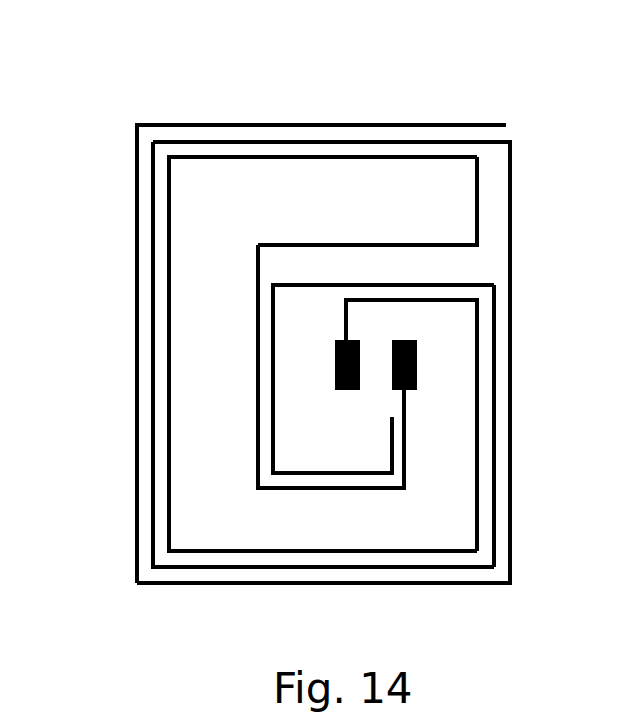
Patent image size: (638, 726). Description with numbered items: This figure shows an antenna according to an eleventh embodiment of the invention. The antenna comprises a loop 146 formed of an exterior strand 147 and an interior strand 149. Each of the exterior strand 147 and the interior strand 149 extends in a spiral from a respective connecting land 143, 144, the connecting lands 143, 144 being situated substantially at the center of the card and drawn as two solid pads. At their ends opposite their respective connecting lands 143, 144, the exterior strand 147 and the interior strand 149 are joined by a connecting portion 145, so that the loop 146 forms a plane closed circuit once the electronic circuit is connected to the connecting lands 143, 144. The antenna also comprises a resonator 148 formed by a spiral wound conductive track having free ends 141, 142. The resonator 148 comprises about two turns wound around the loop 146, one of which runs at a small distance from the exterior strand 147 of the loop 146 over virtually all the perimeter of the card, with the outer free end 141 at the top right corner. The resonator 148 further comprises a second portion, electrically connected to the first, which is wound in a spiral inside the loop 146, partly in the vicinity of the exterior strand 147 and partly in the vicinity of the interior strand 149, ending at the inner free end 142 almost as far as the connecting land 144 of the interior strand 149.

The free end 141 is at (507, 125).
The free end 142 is at (392, 417).
The connecting land 143 is at (335, 360).
The connecting land 144 is at (417, 370).
The connecting portion 145 is at (477, 183).
The loop 146 is at (473, 266).
The exterior strand 147 is at (169, 518).
The resonator 148 is at (515, 424).
The interior strand 149 is at (257, 406).